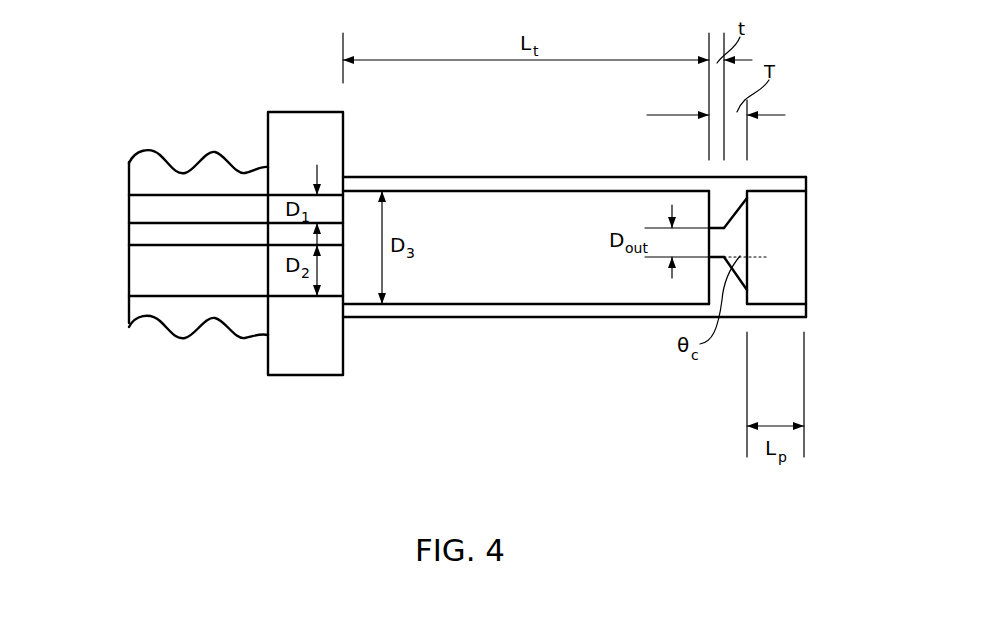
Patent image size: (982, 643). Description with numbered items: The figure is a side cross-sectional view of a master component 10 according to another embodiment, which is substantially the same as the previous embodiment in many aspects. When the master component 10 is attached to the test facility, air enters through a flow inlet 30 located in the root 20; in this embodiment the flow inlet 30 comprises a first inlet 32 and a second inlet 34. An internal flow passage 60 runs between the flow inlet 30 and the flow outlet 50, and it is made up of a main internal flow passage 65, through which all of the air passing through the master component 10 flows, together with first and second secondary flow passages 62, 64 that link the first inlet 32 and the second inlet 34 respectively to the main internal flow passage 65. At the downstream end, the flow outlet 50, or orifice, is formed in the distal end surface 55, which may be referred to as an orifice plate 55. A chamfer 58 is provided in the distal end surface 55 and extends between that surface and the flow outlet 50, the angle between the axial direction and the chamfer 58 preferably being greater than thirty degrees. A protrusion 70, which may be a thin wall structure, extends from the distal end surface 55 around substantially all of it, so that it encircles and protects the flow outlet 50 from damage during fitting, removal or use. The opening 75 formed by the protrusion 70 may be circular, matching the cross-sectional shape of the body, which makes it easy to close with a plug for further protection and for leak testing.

The master component 10 is at (644, 418).
The root 20 is at (215, 167).
The flow inlet 30 is at (188, 248).
The first inlet 32 is at (140, 212).
The second inlet 34 is at (211, 273).
The flow outlet 50 is at (717, 240).
The distal end surface 55 is at (718, 194).
The chamfer 58 is at (735, 212).
The internal flow passage 60 is at (459, 312).
The first secondary flow passage 62 is at (248, 212).
The second secondary flow passage 64 is at (210, 272).
The main internal flow passage 65 is at (434, 285).
The protrusion 70 is at (788, 311).
The opening 75 is at (806, 279).